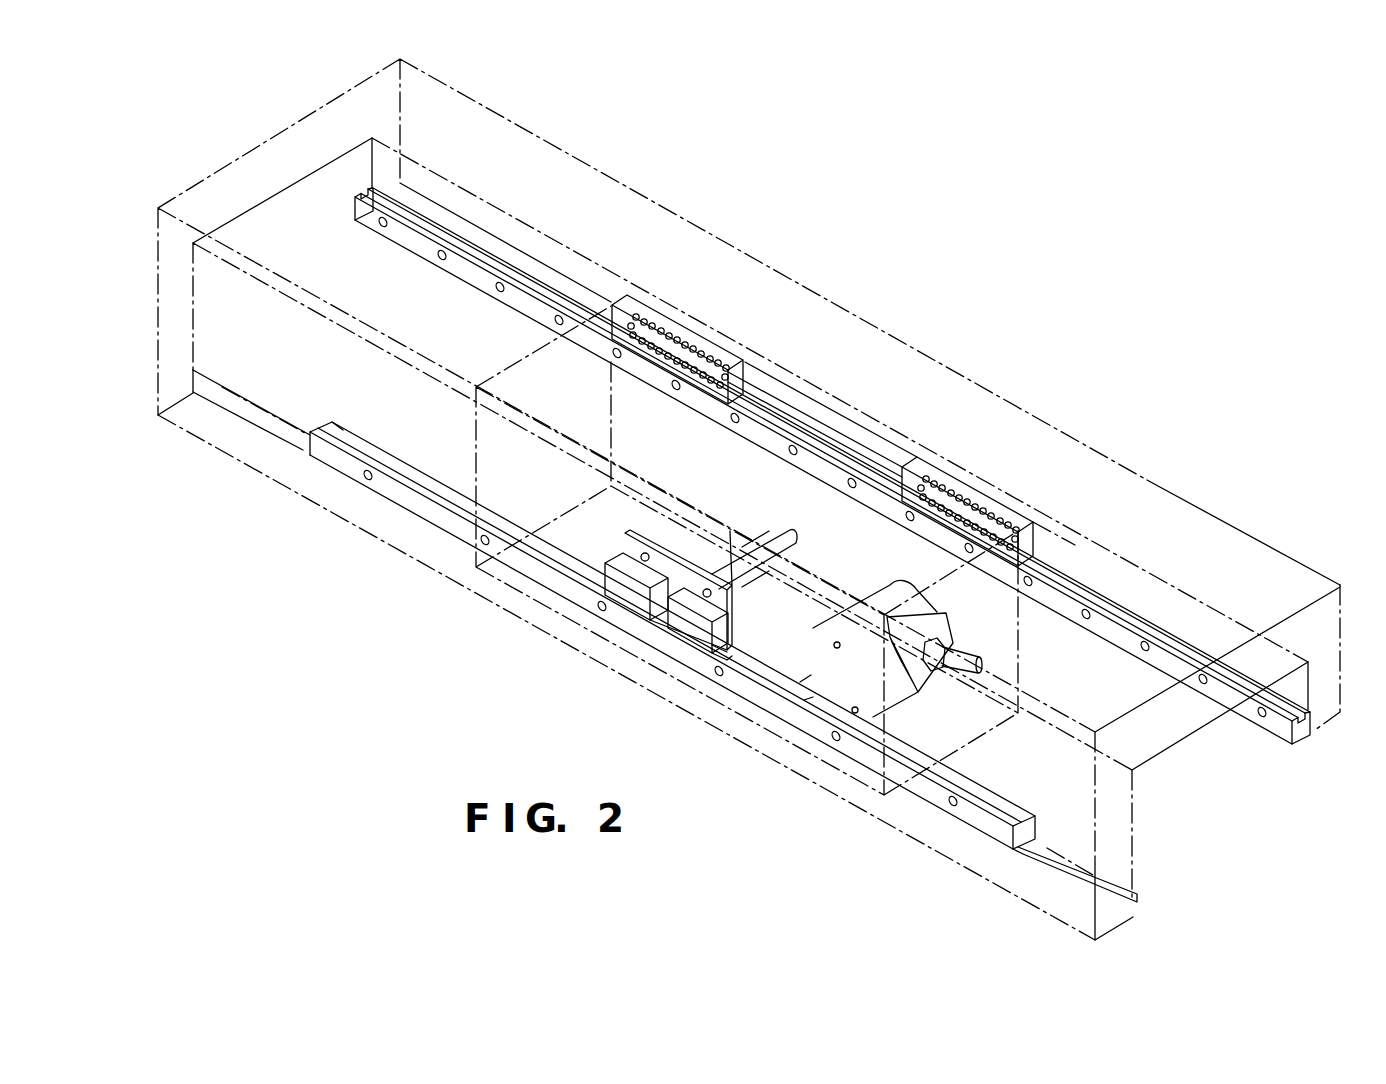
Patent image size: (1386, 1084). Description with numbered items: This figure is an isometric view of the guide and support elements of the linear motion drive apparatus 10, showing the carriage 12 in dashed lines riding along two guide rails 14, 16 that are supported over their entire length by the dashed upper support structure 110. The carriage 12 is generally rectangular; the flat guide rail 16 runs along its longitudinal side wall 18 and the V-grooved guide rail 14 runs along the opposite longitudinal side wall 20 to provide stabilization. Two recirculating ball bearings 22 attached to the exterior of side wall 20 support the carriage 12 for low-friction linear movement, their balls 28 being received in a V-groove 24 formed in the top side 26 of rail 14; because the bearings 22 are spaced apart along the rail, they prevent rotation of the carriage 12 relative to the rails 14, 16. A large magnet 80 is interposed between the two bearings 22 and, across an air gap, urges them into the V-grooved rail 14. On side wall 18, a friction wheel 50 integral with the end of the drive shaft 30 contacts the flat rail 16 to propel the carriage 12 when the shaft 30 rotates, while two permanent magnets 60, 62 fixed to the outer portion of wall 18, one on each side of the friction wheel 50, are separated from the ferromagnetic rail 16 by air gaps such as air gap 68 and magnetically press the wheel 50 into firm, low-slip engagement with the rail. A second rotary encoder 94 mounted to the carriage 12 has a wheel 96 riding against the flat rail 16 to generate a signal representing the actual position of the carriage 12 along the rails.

The linear motion drive apparatus 10 is at (882, 277).
The upper support structure 110 is at (1153, 500).
The carriage 12 is at (567, 380).
The guide rail 14 is at (1110, 630).
The guide rail 16 is at (977, 790).
The longitudinal side wall 18 is at (500, 483).
The longitudinal side wall 20 is at (777, 483).
The recirculating ball bearings 22 is at (678, 345).
The V-groove 24 is at (1280, 713).
The top side 26 is at (1150, 620).
The balls 28 is at (655, 318).
The drive shaft 30 is at (743, 585).
The friction wheel 50 is at (663, 620).
The permanent magnet 60 is at (614, 560).
The permanent magnet 62 is at (725, 615).
The air gap 68 is at (727, 650).
The large magnet 80 is at (818, 408).
The second rotary encoder 94 is at (893, 694).
The wheel 96 is at (818, 694).